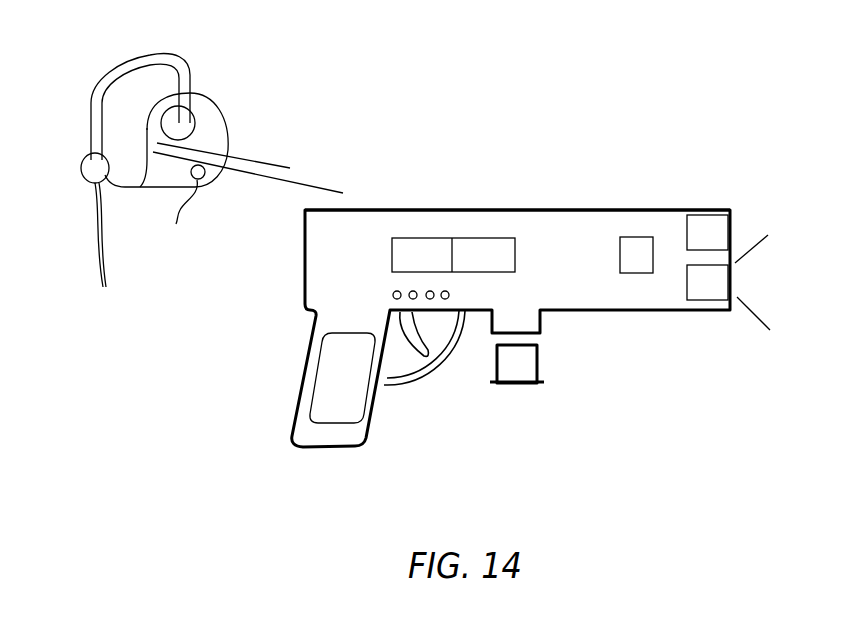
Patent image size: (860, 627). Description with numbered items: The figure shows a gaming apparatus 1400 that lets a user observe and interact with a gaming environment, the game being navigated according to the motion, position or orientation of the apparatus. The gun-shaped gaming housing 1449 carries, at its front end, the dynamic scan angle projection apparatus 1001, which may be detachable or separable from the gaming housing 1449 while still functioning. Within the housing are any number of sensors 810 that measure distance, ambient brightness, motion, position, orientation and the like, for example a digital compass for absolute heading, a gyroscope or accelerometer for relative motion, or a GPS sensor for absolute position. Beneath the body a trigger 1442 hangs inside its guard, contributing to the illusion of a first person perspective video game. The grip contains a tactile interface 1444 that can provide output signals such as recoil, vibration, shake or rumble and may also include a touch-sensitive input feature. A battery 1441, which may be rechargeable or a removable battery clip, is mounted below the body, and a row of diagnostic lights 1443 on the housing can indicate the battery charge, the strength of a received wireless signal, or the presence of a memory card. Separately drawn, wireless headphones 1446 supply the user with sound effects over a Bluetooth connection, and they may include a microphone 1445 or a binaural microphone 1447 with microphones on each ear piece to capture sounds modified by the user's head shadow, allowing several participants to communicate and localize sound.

The gaming apparatus 1400 is at (516, 100).
The gaming housing 1449 is at (537, 210).
The sensors 810 is at (422, 248).
The dynamic scan angle projection apparatus 1001 is at (703, 287).
The diagnostic lights 1443 is at (392, 295).
The tactile interface 1444 is at (327, 358).
The trigger 1442 is at (438, 362).
The battery 1441 is at (524, 385).
The wireless headphones 1446 is at (150, 57).
The binaural microphone 1447 is at (178, 122).
The microphone 1445 is at (248, 198).